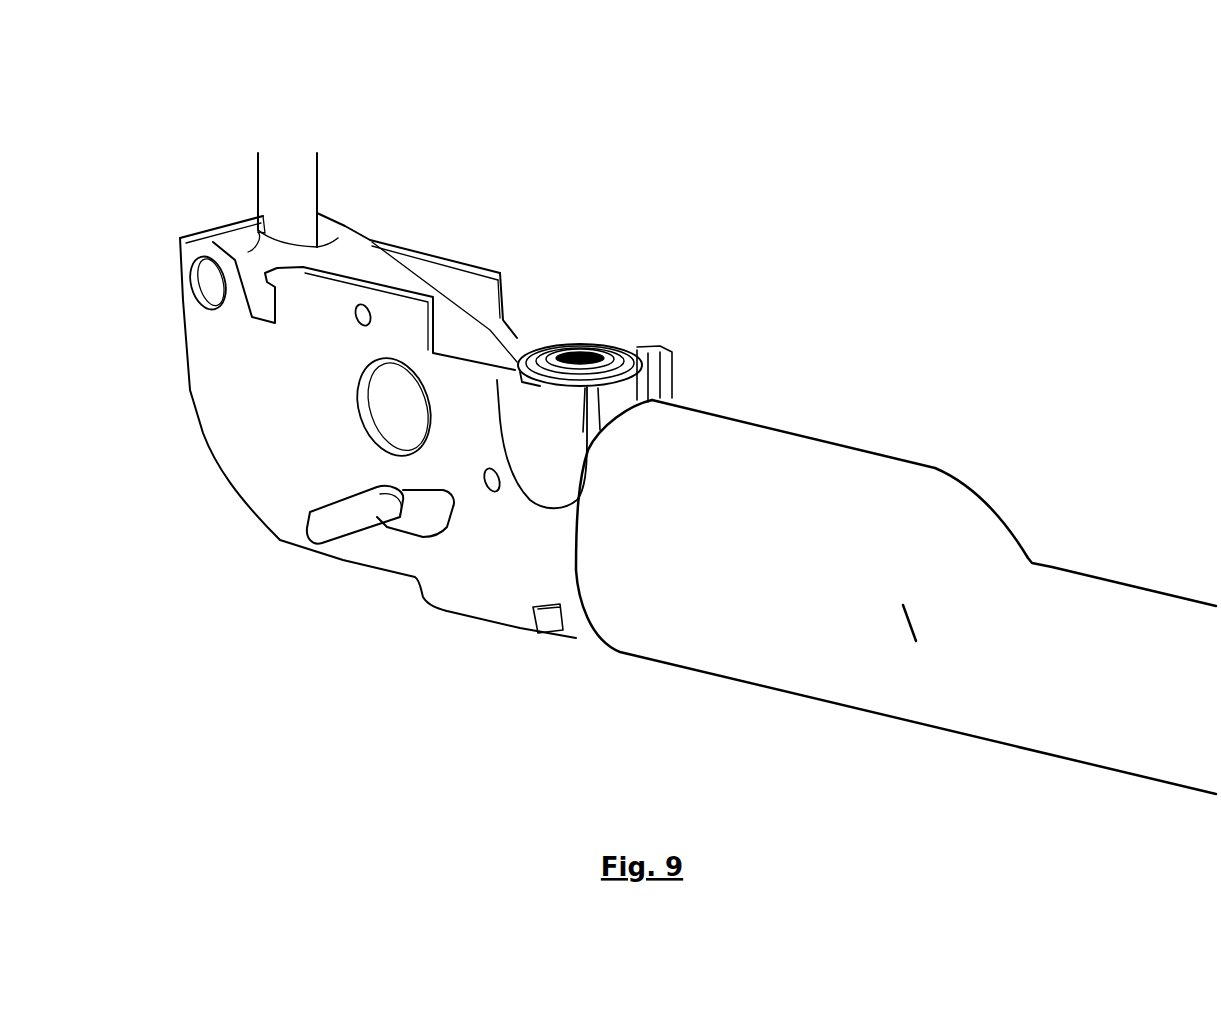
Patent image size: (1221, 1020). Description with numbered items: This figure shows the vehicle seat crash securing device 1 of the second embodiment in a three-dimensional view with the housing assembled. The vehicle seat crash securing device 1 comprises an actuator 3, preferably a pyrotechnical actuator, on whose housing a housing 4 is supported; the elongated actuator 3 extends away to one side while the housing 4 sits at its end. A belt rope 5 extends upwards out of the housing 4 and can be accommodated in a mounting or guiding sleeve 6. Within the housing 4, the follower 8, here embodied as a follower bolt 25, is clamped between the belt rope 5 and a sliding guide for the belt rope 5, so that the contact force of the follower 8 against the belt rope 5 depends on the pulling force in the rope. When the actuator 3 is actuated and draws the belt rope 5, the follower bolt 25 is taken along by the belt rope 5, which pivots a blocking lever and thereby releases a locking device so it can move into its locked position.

The vehicle seat crash securing device 1 is at (563, 133).
The actuator 3 is at (896, 597).
The housing 4 is at (250, 412).
The belt rope 5 is at (344, 200).
The mounting or guiding sleeve 6 is at (295, 183).
The follower bolt 25 is at (380, 572).
The follower 8 is at (353, 520).